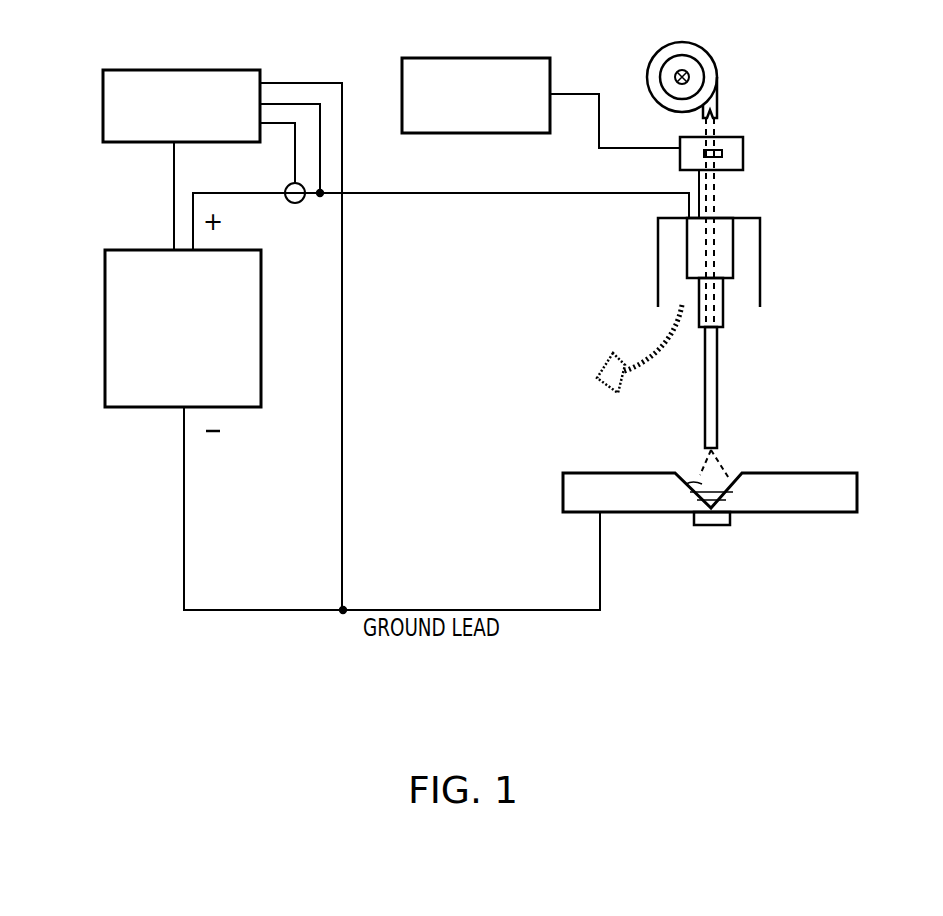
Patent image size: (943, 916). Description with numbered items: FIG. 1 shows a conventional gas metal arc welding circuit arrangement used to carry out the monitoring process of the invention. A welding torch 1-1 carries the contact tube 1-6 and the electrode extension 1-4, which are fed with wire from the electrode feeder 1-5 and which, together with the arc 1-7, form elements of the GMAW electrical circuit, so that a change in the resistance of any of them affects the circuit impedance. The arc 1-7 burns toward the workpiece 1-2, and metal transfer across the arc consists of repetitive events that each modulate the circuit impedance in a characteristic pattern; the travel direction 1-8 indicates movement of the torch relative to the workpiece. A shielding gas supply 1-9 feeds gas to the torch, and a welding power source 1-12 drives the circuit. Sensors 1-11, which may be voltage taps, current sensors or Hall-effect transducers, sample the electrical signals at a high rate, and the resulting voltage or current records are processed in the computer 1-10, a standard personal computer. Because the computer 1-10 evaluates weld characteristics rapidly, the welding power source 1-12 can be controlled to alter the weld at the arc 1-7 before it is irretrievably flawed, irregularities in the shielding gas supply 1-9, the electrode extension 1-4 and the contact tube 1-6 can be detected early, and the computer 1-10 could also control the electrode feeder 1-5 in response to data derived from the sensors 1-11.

The welding torch 1-1 is at (760, 258).
The workpiece 1-2 is at (823, 500).
The electrode extension 1-4 is at (713, 385).
The electrode feeder 1-5 is at (711, 72).
The contact tube 1-6 is at (722, 313).
The arc 1-7 is at (700, 470).
The direction of travel 1-8 is at (640, 350).
The shielding gas supply 1-9 is at (475, 58).
The computer 1-10 is at (152, 83).
The sensors 1-11 is at (318, 198).
The welding power source 1-12 is at (120, 328).